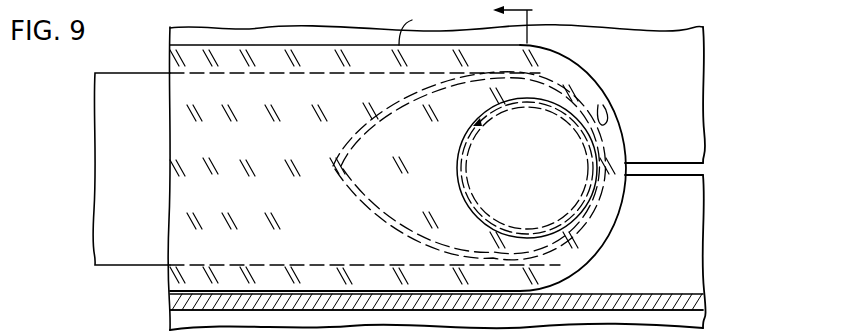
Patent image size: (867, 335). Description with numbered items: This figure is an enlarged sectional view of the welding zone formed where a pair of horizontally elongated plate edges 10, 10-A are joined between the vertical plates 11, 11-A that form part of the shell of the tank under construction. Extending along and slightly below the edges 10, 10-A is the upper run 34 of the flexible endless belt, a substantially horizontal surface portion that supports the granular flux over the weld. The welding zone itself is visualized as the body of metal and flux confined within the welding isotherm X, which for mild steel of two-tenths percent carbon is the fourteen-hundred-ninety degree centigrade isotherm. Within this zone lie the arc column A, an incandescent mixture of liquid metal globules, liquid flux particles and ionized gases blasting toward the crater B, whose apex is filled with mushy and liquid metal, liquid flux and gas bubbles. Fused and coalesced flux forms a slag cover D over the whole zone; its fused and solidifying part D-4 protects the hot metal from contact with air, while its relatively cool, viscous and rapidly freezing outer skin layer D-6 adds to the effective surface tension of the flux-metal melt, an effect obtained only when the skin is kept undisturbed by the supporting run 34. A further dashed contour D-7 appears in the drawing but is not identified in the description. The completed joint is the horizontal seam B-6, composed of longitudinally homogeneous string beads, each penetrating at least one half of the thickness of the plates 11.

The plate edge 10 is at (724, 176).
The plate edge 10-A is at (705, 165).
The vertical plate 11 is at (705, 321).
The vertical plate 11-A is at (706, 86).
The upper run of the belt 34 is at (699, 308).
The horizontal seam B-6 is at (95, 123).
The isotherm X is at (383, 107).
The fused slag cover D is at (477, 125).
The slag cover D-4 is at (235, 138).
The outer layer D-6 is at (443, 193).
The dashed contour D-7 is at (556, 278).
The arc column A is at (530, 127).
The crater B is at (598, 105).